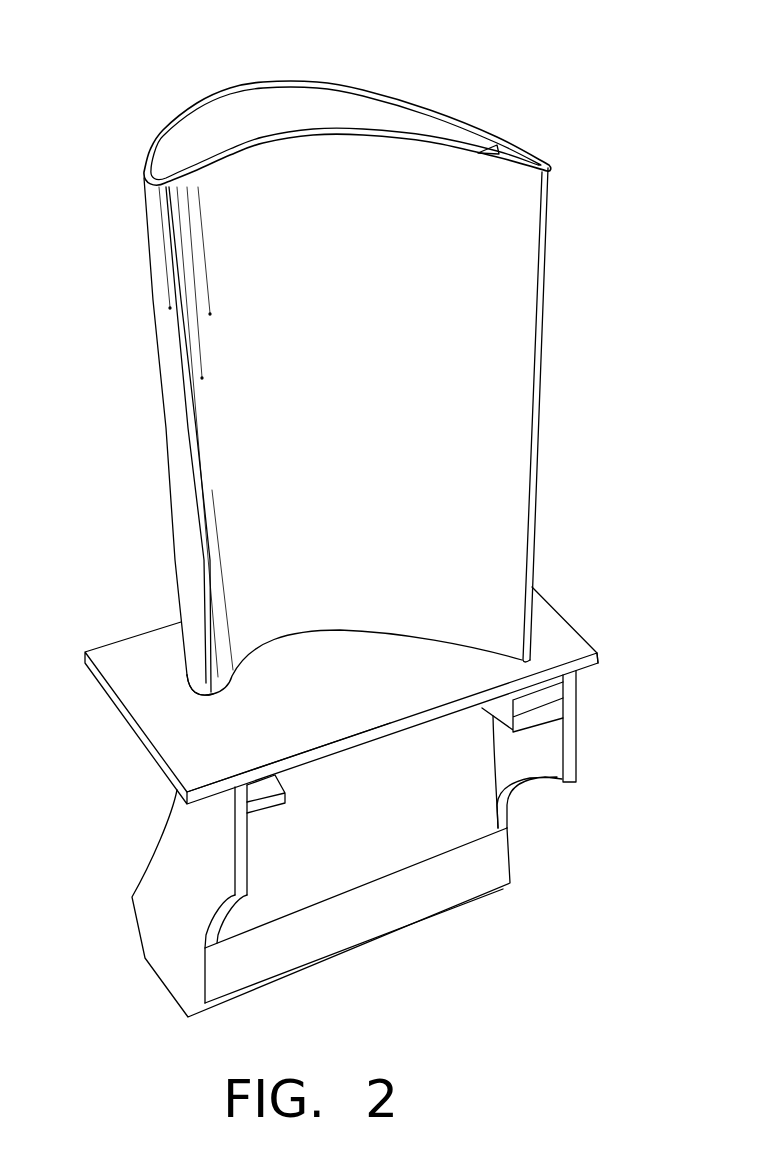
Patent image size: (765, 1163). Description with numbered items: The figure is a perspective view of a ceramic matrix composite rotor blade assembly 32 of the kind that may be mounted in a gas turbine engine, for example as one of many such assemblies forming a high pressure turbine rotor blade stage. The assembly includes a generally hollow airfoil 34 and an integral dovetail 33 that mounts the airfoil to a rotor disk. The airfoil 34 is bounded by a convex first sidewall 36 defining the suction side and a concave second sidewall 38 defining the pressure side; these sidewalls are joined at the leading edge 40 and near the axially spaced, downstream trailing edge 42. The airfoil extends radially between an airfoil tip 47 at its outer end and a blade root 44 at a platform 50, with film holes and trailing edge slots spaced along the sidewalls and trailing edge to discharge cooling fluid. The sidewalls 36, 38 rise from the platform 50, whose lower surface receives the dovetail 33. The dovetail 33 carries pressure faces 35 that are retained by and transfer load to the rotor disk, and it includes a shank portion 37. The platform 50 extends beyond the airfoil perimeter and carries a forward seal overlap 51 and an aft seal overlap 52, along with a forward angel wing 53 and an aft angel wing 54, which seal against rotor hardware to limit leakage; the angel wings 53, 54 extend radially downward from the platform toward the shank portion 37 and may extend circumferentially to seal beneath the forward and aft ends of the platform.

The rotor blade assembly 32 is at (428, 67).
The dovetail 33 is at (172, 850).
The airfoil 34 is at (158, 390).
The pressure faces 35 is at (263, 885).
The first sidewall 36 is at (512, 402).
The shank portion 37 is at (400, 793).
The second sidewall 38 is at (357, 345).
The leading edge 40 is at (143, 179).
The trailing edge 42 is at (577, 180).
The blade root 44 is at (187, 678).
The airfoil tip 47 is at (245, 125).
The platform 50 is at (594, 627).
The forward seal overlap 51 is at (200, 772).
The aft seal overlap 52 is at (606, 657).
The forward angel wing 53 is at (210, 917).
The aft angel wing 54 is at (578, 745).